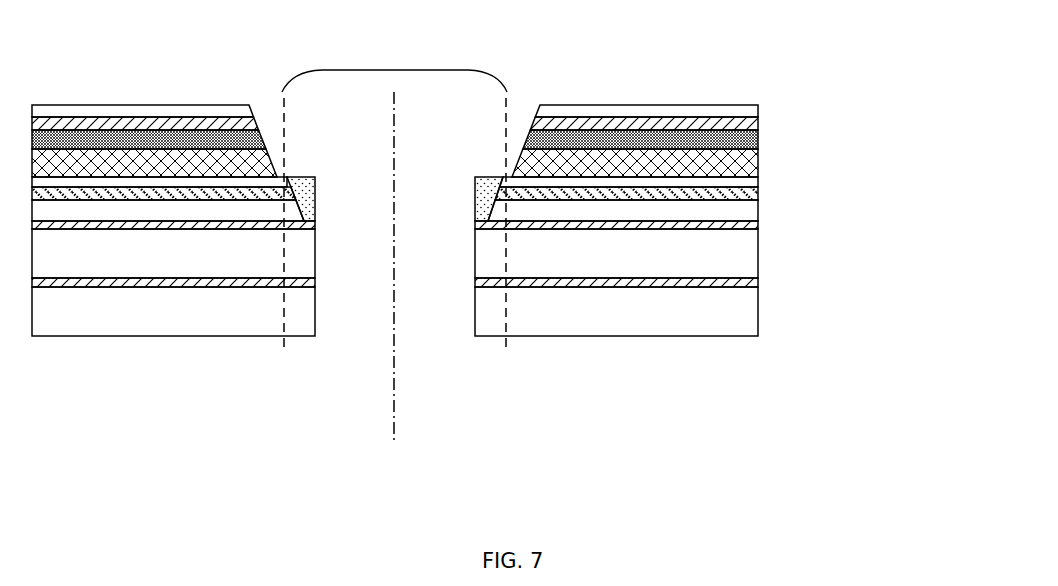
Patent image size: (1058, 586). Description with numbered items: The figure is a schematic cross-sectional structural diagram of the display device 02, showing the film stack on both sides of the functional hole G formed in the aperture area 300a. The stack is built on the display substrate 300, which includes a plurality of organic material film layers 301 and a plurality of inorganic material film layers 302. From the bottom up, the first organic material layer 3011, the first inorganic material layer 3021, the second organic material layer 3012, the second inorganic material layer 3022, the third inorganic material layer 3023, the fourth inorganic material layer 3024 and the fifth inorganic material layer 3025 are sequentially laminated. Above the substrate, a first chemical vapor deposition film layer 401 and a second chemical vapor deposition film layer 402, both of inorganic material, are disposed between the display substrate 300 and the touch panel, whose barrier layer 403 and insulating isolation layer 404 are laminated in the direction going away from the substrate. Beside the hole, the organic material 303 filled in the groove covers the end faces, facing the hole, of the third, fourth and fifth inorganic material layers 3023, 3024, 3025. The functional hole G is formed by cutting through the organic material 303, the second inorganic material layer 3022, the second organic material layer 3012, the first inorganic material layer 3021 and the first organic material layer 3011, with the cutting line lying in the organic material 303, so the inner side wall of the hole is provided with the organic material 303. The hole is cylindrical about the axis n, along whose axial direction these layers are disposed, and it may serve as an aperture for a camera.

The aperture area 300a is at (394, 70).
The functional hole G is at (425, 205).
The axis n is at (402, 368).
The display substrate 300 is at (475, 306).
The organic material film layers 301 is at (395, 334).
The first organic material layer 3011 is at (687, 317).
The second organic material layer 3012 is at (640, 262).
The inorganic material film layers 302 is at (475, 240).
The first inorganic material layer 3021 is at (441, 292).
The second inorganic material layer 3022 is at (758, 225).
The third inorganic material layer 3023 is at (758, 209).
The fourth inorganic material layer 3024 is at (758, 195).
The fifth inorganic material layer 3025 is at (758, 182).
The organic material 303 is at (314, 198).
The first chemical vapor deposition film layer 401 is at (758, 159).
The second chemical vapor deposition film layer 402 is at (758, 138).
The barrier layer 403 is at (758, 124).
The insulating isolation layer 404 is at (758, 113).
The display device 02 is at (398, 490).